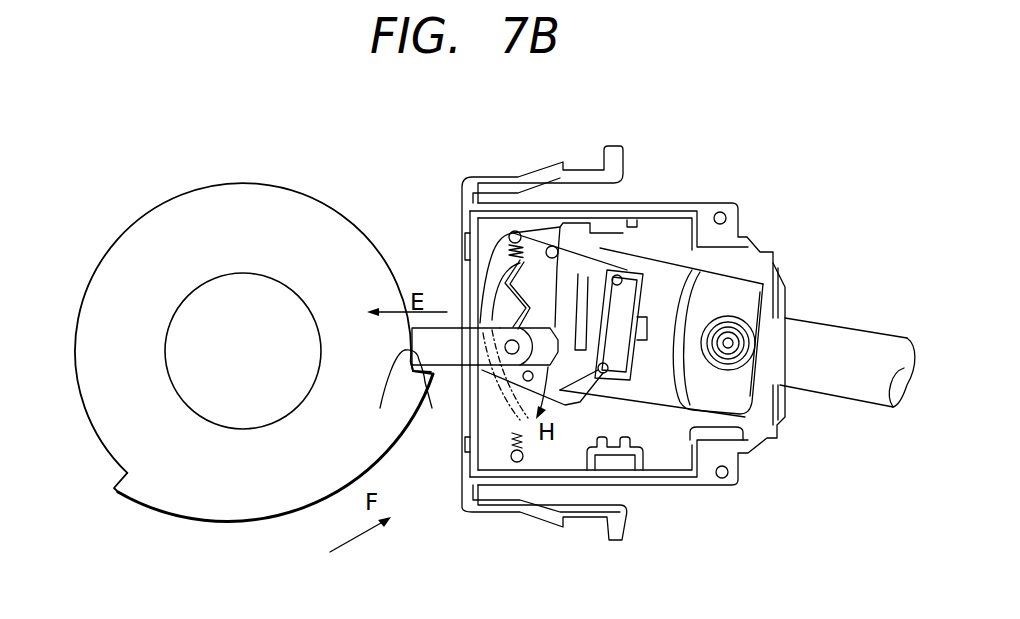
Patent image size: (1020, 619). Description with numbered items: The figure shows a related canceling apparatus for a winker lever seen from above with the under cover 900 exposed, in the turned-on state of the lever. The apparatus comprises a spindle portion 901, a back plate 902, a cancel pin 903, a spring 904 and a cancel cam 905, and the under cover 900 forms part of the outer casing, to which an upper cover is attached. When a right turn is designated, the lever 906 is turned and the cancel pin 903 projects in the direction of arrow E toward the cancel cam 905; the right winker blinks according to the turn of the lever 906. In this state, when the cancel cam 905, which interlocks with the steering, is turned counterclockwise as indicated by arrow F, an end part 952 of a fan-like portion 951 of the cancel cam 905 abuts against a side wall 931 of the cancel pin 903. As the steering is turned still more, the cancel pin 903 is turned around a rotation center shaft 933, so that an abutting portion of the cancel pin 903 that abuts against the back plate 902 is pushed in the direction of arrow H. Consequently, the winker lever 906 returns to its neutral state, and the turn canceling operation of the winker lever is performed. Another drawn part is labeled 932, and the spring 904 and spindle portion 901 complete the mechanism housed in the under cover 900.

The under cover 900 is at (730, 480).
The spindle portion 901 is at (680, 277).
The back plate 902 is at (617, 240).
The cancel pin 903 is at (455, 328).
The spring 904 is at (508, 446).
The cancel cam 905 is at (298, 200).
The lever 906 is at (850, 336).
The side wall 931 is at (428, 385).
The lever 932 is at (567, 393).
The rotation center shaft 933 is at (565, 360).
The fan-like portion 951 is at (205, 500).
The end part 952 is at (407, 355).